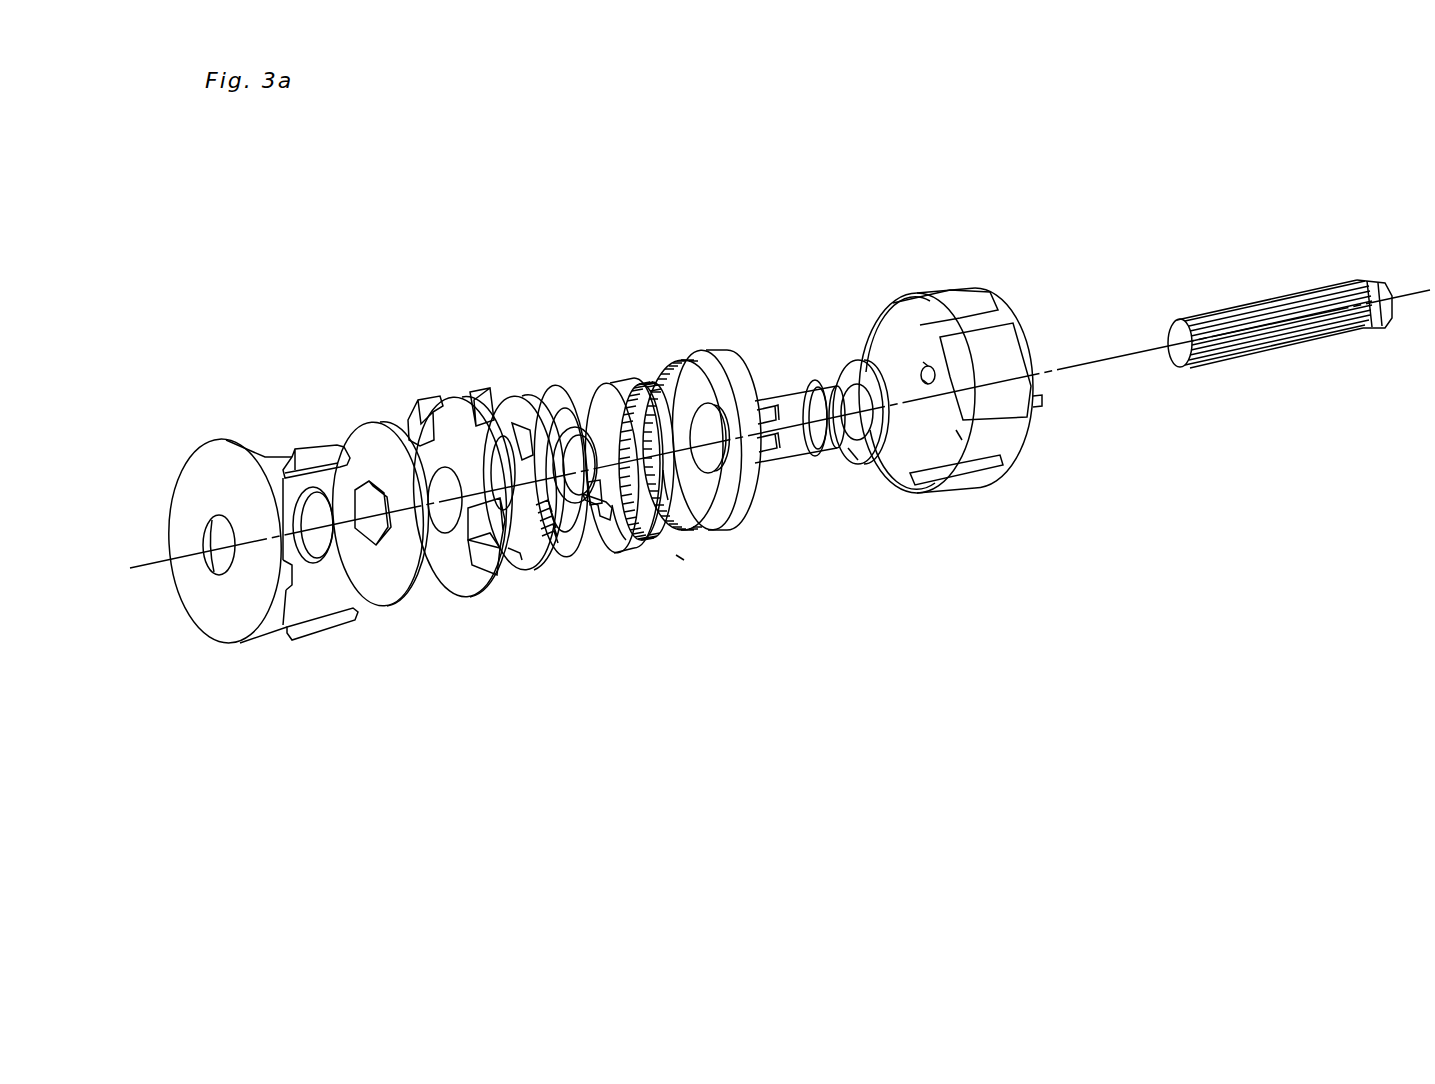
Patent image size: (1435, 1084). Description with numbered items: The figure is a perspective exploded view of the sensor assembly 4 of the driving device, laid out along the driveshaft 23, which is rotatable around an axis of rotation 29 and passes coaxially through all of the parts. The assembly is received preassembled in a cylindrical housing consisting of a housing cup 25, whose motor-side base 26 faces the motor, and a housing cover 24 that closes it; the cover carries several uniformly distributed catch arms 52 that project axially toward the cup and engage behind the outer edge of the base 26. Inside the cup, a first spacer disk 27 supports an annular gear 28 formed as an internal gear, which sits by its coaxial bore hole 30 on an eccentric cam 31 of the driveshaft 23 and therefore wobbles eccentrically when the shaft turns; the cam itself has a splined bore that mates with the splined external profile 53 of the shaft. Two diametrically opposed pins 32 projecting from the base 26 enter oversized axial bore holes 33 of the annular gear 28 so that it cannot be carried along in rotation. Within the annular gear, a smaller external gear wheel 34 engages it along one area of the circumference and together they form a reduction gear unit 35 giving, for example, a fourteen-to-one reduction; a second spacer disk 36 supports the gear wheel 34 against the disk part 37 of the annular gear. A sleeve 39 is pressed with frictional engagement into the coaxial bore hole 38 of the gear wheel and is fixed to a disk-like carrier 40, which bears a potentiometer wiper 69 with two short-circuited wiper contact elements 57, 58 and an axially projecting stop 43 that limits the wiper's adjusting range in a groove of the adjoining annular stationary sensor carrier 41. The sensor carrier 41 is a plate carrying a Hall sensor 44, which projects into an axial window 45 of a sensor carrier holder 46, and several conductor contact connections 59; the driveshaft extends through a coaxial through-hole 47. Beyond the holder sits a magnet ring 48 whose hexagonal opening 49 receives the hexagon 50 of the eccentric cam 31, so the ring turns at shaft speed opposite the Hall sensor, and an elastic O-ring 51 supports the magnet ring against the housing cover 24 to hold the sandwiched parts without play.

The sensor assembly 4 is at (358, 194).
The driveshaft 23 is at (1357, 283).
The housing cover 24 is at (238, 635).
The housing cup 25 is at (1022, 497).
The base 26 is at (957, 432).
The first spacer disk 27 is at (862, 453).
The annular gear 28 is at (740, 535).
The axis of rotation 29 is at (1147, 347).
The coaxial bore hole 30 is at (707, 424).
The eccentric cam 31 is at (826, 385).
The pins 32 is at (925, 365).
The axial bore holes 33 is at (676, 425).
The gear wheel 34 is at (620, 497).
The reduction gear unit 35 is at (682, 563).
The second spacer disk 36 is at (673, 482).
The disk part 37 is at (713, 497).
The coaxial bore hole 38 is at (616, 505).
The sleeve 39 is at (558, 388).
The carrier 40 is at (595, 540).
The sensor carrier 41 is at (543, 525).
The stop 43 is at (585, 520).
The Hall sensor 44 is at (518, 437).
The axial window 45 is at (425, 420).
The sensor carrier holder 46 is at (478, 555).
The coaxial through-hole 47 is at (435, 548).
The magnet ring 48 is at (375, 433).
The hexagonal opening 49 is at (363, 480).
The hexagon 50 is at (787, 465).
The O-ring 51 is at (302, 478).
The catch arms 52 is at (292, 460).
The splined external profile 53 is at (1293, 322).
The wiper contact element 57 is at (603, 510).
The wiper contact element 58 is at (583, 440).
The conductor contact connections 59 is at (518, 560).
The potentiometer wiper 69 is at (600, 528).